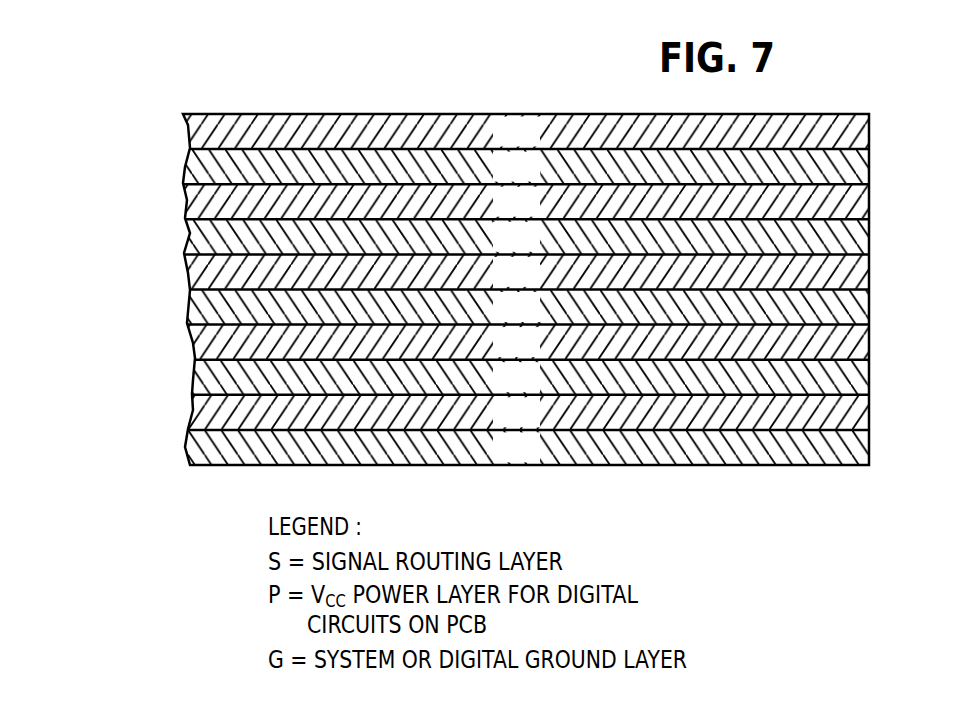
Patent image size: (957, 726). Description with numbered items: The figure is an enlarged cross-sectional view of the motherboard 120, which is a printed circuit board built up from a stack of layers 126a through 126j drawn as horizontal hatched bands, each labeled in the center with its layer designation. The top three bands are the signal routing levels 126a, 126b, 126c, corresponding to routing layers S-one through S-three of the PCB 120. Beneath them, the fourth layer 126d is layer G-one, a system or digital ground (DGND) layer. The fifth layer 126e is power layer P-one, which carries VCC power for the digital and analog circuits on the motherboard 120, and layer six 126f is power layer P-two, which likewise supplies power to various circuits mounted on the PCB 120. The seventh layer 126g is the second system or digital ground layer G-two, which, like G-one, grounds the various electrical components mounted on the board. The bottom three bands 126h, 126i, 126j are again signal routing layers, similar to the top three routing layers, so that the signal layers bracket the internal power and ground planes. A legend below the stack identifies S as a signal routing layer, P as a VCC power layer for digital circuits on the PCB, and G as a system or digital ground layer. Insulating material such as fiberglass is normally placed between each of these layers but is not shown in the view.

The motherboard 120 is at (258, 98).
The signal routing layer S1 126a is at (188, 123).
The signal routing layer S2 126b is at (186, 158).
The signal routing layer S3 126c is at (186, 201).
The ground layer G1 126d is at (188, 237).
The power layer P1 126e is at (188, 274).
The power layer P2 126f is at (188, 305).
The ground layer G2 126g is at (195, 343).
The signal routing layer S4 126h is at (194, 379).
The signal routing layer S5 126i is at (194, 409).
The signal routing layer S6 126j is at (189, 453).